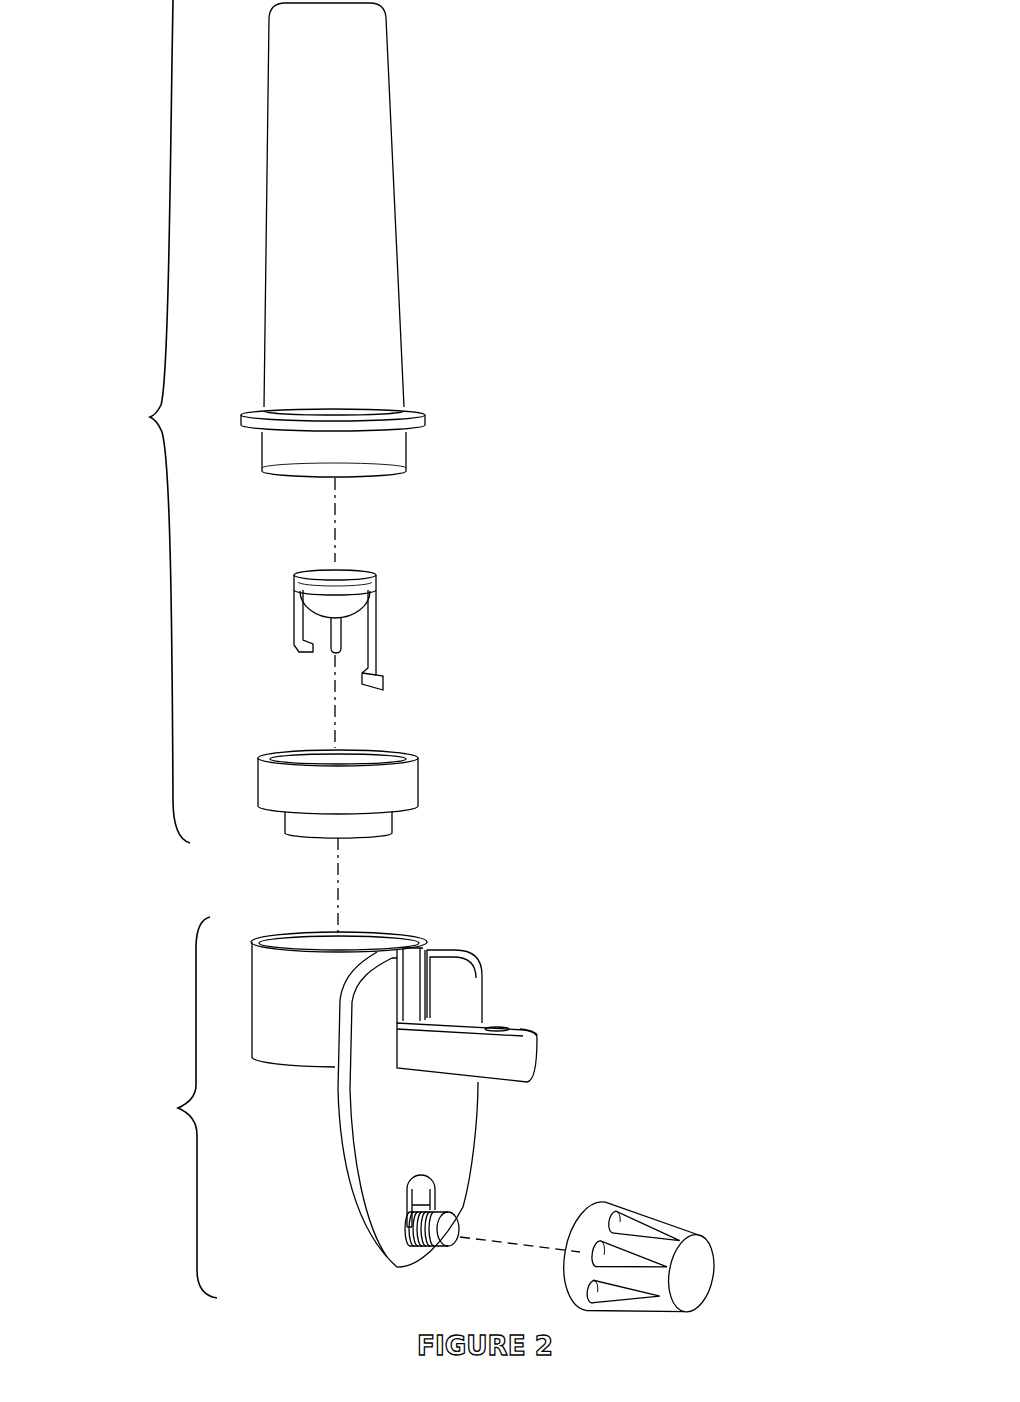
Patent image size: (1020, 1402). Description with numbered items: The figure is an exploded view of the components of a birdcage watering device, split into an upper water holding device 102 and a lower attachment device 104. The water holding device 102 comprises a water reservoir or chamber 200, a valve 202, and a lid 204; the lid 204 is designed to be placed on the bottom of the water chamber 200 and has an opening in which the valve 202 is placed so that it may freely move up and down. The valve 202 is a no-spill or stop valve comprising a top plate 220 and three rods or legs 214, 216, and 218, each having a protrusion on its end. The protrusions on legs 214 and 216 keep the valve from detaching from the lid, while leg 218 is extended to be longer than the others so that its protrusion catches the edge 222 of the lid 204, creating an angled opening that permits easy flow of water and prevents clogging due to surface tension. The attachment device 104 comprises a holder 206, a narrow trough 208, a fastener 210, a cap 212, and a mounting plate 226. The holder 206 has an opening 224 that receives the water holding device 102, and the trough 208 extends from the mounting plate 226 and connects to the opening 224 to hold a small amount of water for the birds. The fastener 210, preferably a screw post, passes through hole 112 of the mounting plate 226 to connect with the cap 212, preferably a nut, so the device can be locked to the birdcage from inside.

The water holding device 102 is at (145, 421).
The attachment device 104 is at (172, 1107).
The hole 112 is at (405, 1190).
The water reservoir or chamber 200 is at (402, 231).
The valve 202 is at (347, 619).
The lid 204 is at (400, 801).
The holder 206 is at (339, 1018).
The trough 208 is at (518, 1057).
The fastener 210 is at (450, 1227).
The cap 212 is at (690, 1267).
The leg 214 is at (294, 642).
The leg 216 is at (335, 653).
The leg 218 is at (380, 673).
The top plate 220 is at (345, 573).
The edge 222 is at (377, 822).
The opening 224 is at (348, 943).
The mounting plate 226 is at (448, 1137).